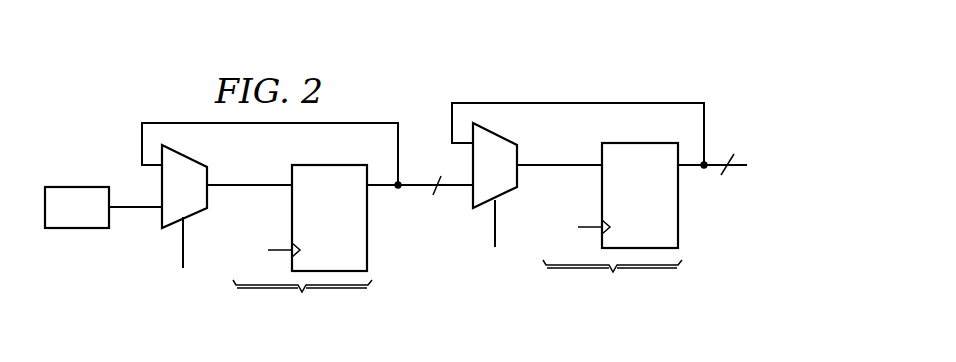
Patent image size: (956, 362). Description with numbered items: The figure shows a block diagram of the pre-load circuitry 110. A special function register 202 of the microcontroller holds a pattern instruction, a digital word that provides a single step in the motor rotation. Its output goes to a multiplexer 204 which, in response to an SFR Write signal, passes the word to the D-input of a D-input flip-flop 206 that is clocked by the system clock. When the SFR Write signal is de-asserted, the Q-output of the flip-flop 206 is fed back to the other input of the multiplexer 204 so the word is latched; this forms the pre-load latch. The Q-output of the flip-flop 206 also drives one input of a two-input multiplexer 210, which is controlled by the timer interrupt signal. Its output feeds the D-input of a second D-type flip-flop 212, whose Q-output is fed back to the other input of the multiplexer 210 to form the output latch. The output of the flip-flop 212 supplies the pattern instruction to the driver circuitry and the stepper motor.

The pre-load circuitry 110 is at (414, 89).
The special function register 202 is at (77, 185).
The multiplexer 204 is at (207, 172).
The D-input flip-flop 206 is at (367, 223).
The two-input multiplexer 210 is at (517, 152).
The second D-type flip-flop 212 is at (678, 202).